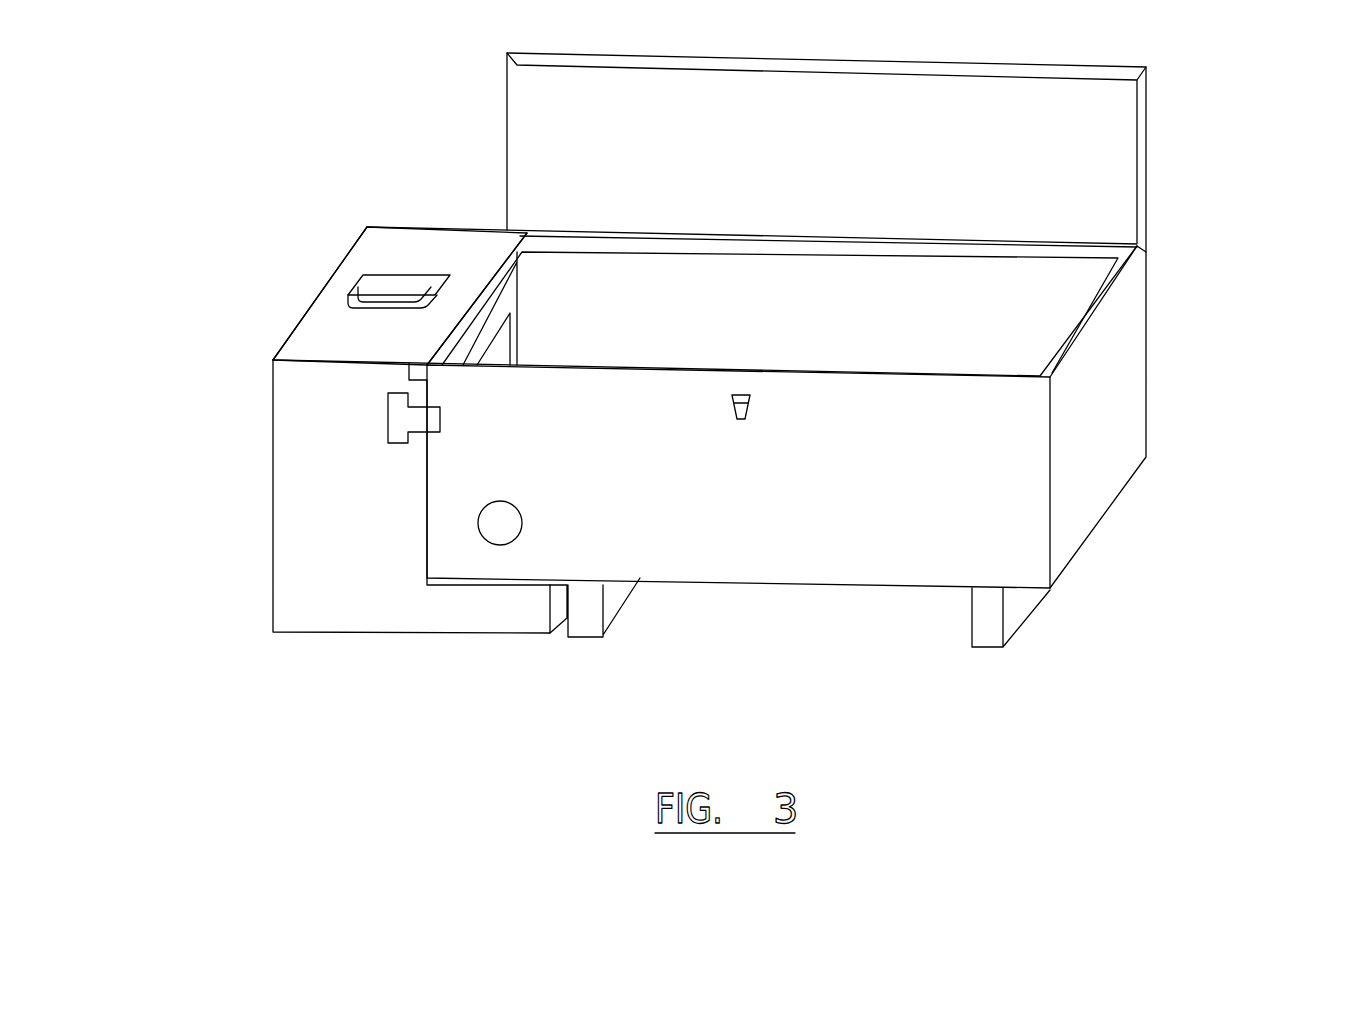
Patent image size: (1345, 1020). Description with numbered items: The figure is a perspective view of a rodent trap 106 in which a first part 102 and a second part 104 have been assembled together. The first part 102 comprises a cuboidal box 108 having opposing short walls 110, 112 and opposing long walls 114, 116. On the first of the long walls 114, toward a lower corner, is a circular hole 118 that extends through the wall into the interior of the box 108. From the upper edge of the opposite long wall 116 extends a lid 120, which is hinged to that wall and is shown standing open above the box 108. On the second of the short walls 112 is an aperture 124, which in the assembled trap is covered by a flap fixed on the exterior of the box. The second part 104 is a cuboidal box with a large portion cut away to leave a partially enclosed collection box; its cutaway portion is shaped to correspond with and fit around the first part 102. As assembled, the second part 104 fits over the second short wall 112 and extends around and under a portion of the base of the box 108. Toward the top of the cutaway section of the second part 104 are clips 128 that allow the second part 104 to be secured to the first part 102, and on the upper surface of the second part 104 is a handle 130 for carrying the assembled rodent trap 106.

The first part 102 is at (799, 350).
The second part 104 is at (350, 453).
The rodent trap 106 is at (327, 235).
The cuboidal box 108 is at (759, 325).
The short wall 110 is at (1122, 432).
The short wall 112 is at (507, 287).
The long wall 114 is at (757, 486).
The long wall 116 is at (874, 325).
The circular hole 118 is at (500, 525).
The lid 120 is at (839, 159).
The aperture 124 is at (500, 352).
The clips 128 is at (430, 418).
The handle 130 is at (372, 313).